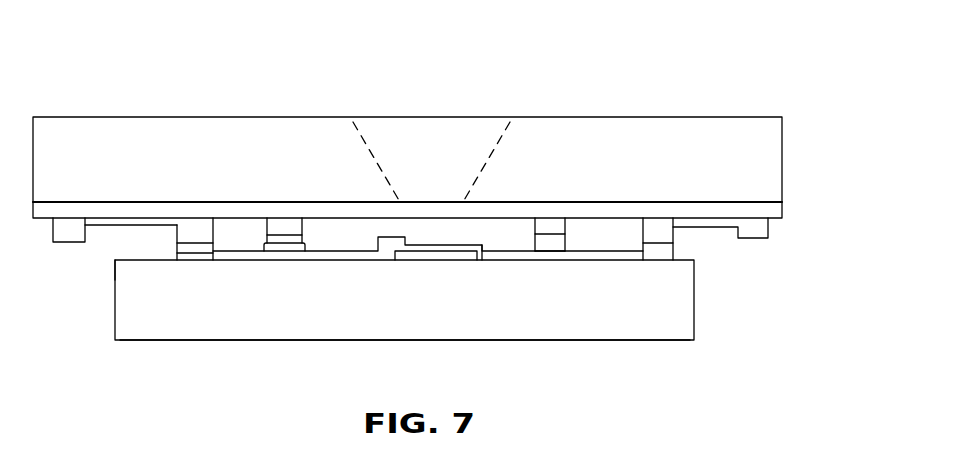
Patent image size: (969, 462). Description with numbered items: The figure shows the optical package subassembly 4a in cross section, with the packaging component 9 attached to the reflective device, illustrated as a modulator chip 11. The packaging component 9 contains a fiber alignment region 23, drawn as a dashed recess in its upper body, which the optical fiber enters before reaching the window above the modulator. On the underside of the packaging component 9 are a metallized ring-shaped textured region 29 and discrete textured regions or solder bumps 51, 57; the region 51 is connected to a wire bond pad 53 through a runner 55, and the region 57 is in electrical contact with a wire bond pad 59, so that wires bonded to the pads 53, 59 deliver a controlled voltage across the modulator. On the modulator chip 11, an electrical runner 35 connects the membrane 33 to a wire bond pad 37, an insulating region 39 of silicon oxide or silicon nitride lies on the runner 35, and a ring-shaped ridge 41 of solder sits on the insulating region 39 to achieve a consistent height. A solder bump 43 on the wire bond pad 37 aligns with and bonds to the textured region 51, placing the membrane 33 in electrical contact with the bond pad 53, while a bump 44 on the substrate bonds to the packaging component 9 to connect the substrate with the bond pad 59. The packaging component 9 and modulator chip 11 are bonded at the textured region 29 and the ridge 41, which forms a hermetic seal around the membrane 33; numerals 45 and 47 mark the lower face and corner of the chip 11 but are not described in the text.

The optical package subassembly 4a is at (237, 58).
The packaging component 9 is at (783, 155).
The fiber alignment region 23 is at (417, 130).
The reflective device (modulator chip) 11 is at (694, 314).
The bottom surface of substrate 45 is at (168, 341).
The wire bond pad 53 is at (70, 243).
The runner 55 is at (116, 226).
The corner / edge of substrate 47 is at (127, 258).
The textured region (solder bump) 51 is at (187, 225).
The solder bump 43 is at (205, 247).
The wire bond pad 37 is at (197, 257).
The textured region 29 is at (289, 226).
The ring-shaped ridge 41 is at (278, 239).
The insulating region 39 is at (288, 250).
The electrical runner 35 is at (348, 252).
The membrane 33 is at (482, 246).
The textured region (solder bump) 57 is at (659, 225).
The bump 44 is at (658, 252).
The wire bond pad 59 is at (753, 238).